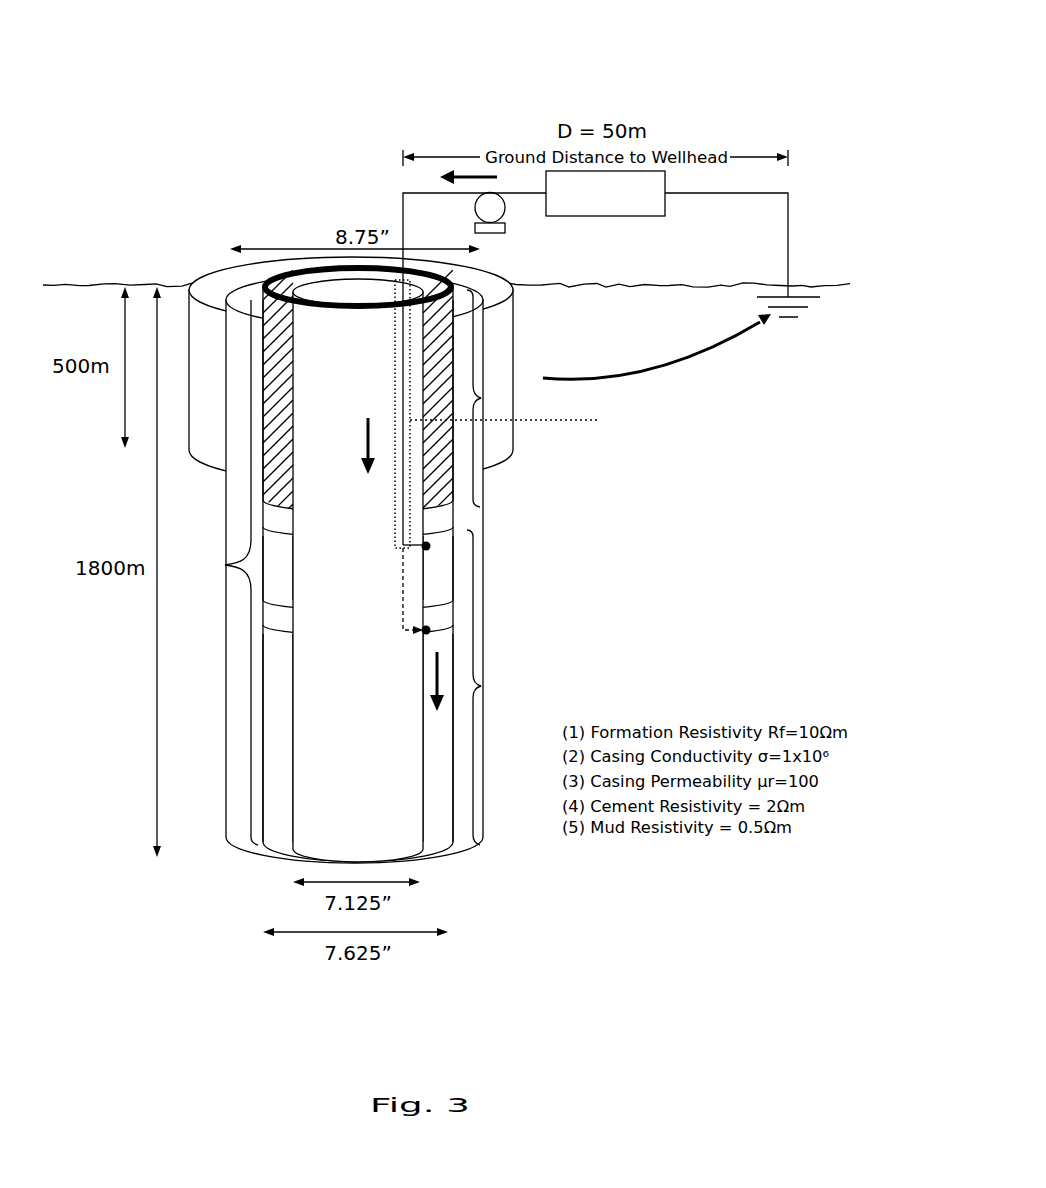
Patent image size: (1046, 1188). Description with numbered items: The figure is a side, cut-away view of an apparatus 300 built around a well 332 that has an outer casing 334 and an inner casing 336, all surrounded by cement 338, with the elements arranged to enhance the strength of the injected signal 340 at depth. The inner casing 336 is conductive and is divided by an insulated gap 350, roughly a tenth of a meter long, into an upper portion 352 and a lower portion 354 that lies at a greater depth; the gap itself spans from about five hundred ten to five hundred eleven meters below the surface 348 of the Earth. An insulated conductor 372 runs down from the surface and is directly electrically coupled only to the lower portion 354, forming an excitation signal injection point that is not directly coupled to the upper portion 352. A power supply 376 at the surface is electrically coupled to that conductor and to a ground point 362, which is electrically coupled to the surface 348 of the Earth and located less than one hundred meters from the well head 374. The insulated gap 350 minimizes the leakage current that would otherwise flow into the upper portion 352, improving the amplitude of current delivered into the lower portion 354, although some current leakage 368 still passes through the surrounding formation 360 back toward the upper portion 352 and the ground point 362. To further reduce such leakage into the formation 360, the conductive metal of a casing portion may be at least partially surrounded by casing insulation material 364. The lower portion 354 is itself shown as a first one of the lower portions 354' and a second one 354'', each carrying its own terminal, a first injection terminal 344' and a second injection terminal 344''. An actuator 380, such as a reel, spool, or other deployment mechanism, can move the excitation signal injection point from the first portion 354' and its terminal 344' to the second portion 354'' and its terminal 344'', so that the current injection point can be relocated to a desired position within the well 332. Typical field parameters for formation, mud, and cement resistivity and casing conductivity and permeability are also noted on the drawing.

The apparatus 300 is at (677, 107).
The well 332 is at (372, 790).
The outer casing 334 is at (195, 462).
The inner casing 336 is at (225, 565).
The cement 338 is at (226, 752).
The injected signal 340 is at (470, 176).
The first injection terminal 344' is at (381, 567).
The second injection terminal 344'' is at (381, 612).
The surface of the Earth 348 is at (83, 285).
The insulated gap 350 is at (455, 518).
The upper portion 352 is at (481, 398).
The lower portion 354 is at (409, 565).
The first one of the lower portions 354' is at (404, 568).
The second one of the lower portions 354'' is at (402, 738).
The formation 360 is at (704, 472).
The ground point 362 is at (789, 282).
The casing insulation material 364 is at (277, 320).
The current leakage 368 is at (717, 357).
The insulated conductor 372 is at (402, 192).
The well head 374 is at (265, 226).
The power supply 376 is at (647, 217).
The actuator 380 is at (475, 203).